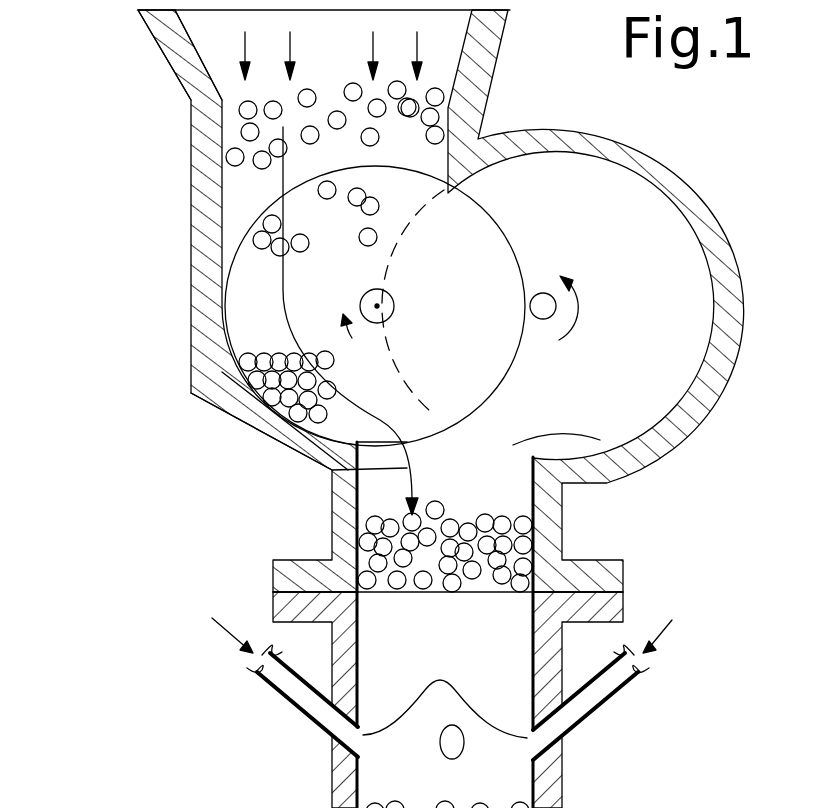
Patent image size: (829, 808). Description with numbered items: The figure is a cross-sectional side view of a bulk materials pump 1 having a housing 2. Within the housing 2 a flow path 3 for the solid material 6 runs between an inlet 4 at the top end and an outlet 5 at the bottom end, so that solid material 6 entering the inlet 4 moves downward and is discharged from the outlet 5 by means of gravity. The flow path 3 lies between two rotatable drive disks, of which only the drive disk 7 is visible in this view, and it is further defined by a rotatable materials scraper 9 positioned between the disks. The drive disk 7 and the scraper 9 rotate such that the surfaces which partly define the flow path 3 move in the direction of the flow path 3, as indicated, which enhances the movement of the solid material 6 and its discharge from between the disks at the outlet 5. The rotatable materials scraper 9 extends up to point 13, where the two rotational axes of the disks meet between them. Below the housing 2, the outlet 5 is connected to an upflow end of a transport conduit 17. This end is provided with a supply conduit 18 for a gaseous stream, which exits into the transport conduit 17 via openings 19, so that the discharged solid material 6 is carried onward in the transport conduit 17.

The bulk materials pump 1 is at (124, 182).
The housing 2 is at (207, 298).
The flow path 3 is at (332, 471).
The inlet 4 is at (200, 32).
The outlet 5 is at (482, 585).
The solid material 6 is at (352, 90).
The rotatable drive disk 7 is at (473, 228).
The rotatable materials scraper 9 is at (643, 452).
The point 13 is at (380, 308).
The transport conduit 17 is at (562, 772).
The supply conduit 18 is at (316, 709).
The openings 19 is at (444, 724).